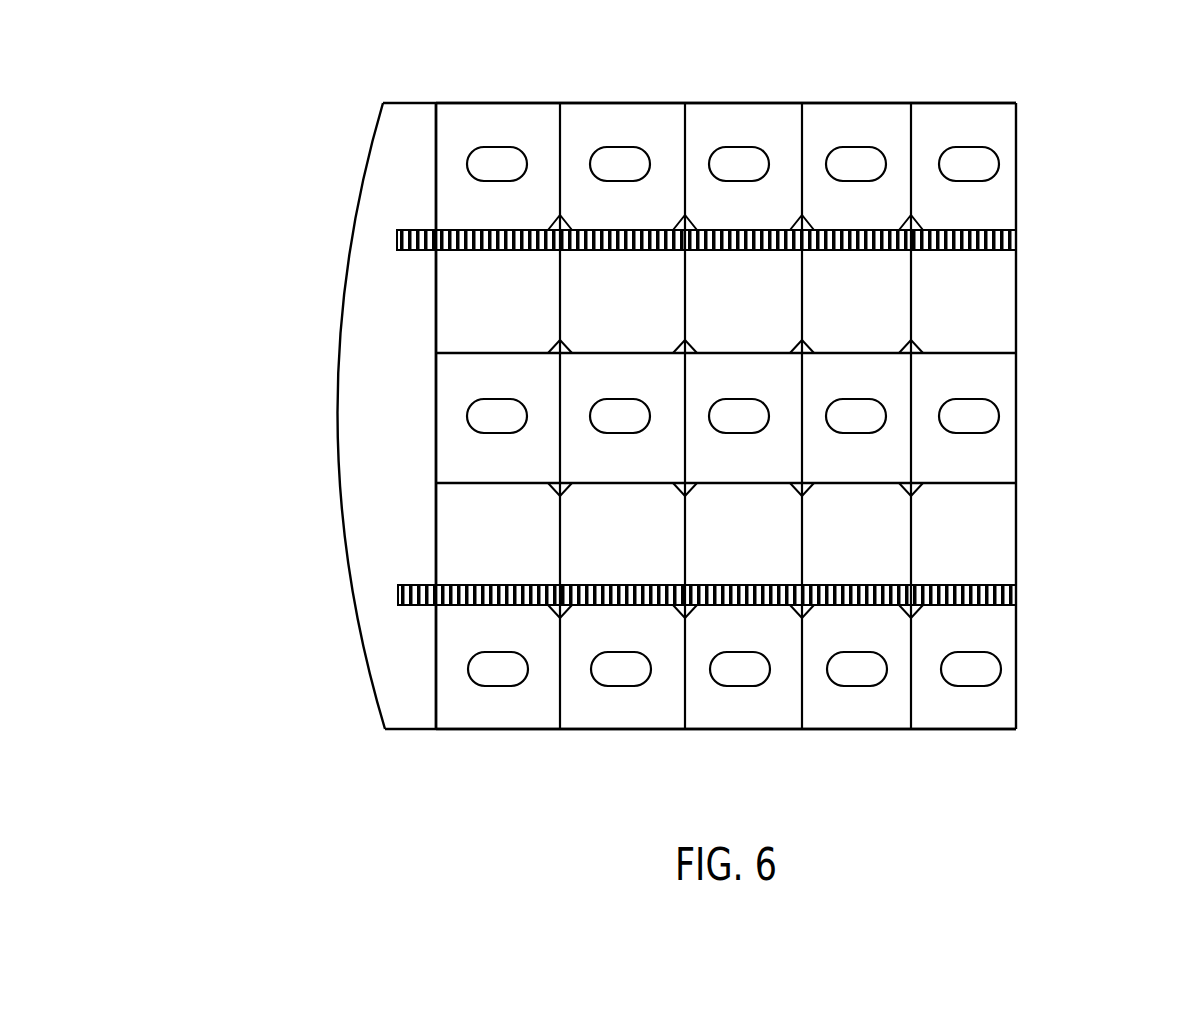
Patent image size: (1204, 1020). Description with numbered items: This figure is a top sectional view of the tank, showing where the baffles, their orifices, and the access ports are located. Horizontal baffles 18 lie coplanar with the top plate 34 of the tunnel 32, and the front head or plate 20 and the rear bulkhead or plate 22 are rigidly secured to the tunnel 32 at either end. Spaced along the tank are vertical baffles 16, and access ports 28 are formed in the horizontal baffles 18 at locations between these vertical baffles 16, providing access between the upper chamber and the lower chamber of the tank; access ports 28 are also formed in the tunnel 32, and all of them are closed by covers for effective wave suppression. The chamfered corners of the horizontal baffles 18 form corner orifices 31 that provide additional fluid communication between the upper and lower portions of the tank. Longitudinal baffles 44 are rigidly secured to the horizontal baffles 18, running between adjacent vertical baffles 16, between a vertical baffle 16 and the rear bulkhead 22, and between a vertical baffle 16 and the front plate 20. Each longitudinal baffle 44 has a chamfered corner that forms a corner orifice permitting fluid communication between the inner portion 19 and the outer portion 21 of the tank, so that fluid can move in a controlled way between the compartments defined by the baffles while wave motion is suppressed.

The vertical baffles 16 is at (913, 148).
The horizontal baffles 18 is at (987, 557).
The inner portion 19 is at (467, 518).
The front head or plate 20 is at (378, 704).
The outer portion 21 is at (462, 130).
The rear bulkhead or plate 22 is at (1016, 147).
The access ports 28 is at (498, 140).
The corner orifices 31 is at (922, 343).
The tunnel 32 is at (1016, 387).
The top plate 34 is at (998, 465).
The longitudinal baffles 44 is at (1016, 244).